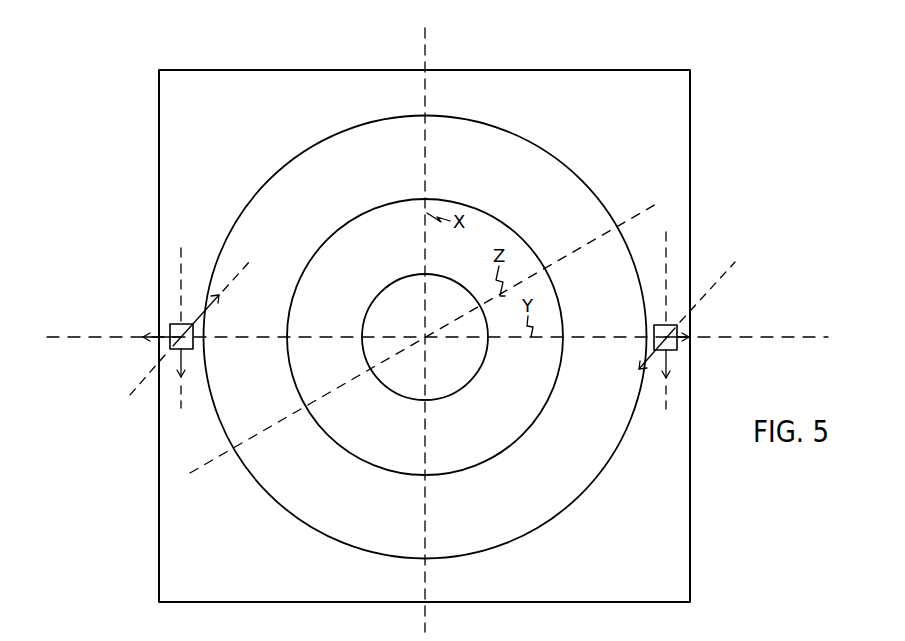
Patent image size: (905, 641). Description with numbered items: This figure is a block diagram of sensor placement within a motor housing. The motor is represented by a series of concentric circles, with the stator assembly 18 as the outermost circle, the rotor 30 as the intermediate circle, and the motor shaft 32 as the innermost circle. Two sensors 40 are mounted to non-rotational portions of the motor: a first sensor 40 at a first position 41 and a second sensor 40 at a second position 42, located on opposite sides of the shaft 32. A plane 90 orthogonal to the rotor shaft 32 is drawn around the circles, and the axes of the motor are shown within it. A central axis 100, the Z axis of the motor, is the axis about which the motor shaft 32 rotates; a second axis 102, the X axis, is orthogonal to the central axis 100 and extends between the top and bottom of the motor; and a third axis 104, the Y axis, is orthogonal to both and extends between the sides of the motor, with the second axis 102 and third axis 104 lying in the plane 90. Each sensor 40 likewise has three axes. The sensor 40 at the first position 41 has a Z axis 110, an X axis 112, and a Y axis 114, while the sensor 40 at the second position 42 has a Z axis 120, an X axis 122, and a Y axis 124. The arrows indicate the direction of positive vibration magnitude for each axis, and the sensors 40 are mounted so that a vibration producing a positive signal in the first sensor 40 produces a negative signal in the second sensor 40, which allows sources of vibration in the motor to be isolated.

The plane 90 is at (692, 123).
The stator assembly 18 is at (280, 170).
The rotor 30 is at (366, 212).
The motor shaft 32 is at (394, 281).
The sensor 40 is at (415, 328).
The first position 41 is at (171, 325).
The second position 42 is at (674, 348).
The central axis 100 is at (424, 310).
The second axis 102 is at (455, 330).
The third axis 104 is at (463, 314).
The Z axis 110 is at (219, 306).
The X axis 112 is at (201, 310).
The Y axis 114 is at (104, 311).
The Z axis 120 is at (700, 317).
The X axis 122 is at (688, 328).
The Y axis 124 is at (692, 328).